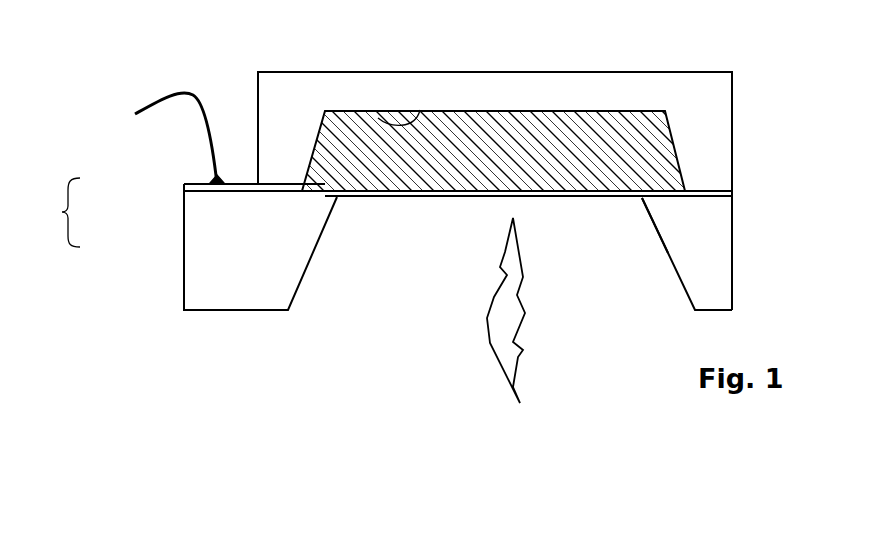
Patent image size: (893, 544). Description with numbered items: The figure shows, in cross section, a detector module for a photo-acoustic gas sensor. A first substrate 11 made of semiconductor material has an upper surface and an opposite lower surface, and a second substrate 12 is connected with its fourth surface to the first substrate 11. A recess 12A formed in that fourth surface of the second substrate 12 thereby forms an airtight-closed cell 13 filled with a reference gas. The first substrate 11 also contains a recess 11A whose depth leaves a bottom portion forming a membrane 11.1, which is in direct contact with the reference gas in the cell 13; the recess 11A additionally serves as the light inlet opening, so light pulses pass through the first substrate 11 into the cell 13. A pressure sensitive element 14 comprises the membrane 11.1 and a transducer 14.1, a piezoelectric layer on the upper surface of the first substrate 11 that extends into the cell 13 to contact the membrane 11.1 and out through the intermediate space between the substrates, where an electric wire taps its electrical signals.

The first substrate 11 is at (722, 278).
The recess 11A is at (640, 197).
The membrane 11.1 is at (393, 197).
The second substrate 12 is at (302, 82).
The recess 12A is at (420, 110).
The airtight-closed cell 13 is at (627, 137).
The pressure sensitive element 14 is at (182, 244).
The transducer 14.1 is at (184, 189).